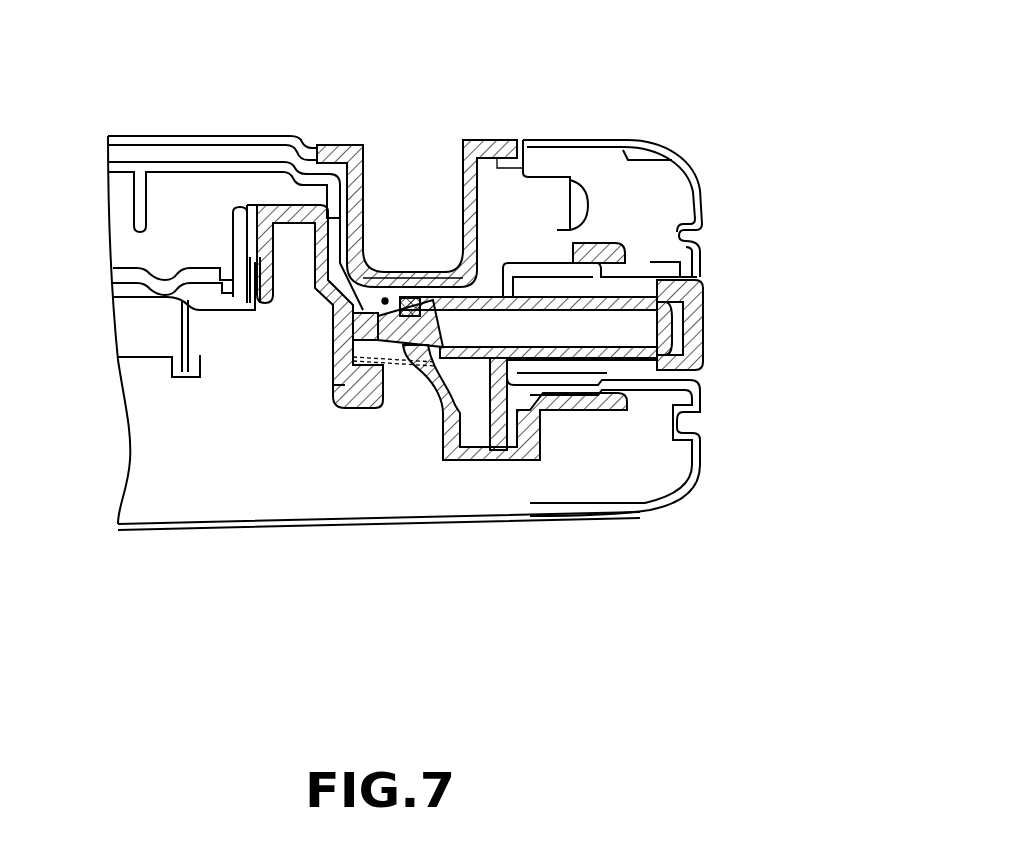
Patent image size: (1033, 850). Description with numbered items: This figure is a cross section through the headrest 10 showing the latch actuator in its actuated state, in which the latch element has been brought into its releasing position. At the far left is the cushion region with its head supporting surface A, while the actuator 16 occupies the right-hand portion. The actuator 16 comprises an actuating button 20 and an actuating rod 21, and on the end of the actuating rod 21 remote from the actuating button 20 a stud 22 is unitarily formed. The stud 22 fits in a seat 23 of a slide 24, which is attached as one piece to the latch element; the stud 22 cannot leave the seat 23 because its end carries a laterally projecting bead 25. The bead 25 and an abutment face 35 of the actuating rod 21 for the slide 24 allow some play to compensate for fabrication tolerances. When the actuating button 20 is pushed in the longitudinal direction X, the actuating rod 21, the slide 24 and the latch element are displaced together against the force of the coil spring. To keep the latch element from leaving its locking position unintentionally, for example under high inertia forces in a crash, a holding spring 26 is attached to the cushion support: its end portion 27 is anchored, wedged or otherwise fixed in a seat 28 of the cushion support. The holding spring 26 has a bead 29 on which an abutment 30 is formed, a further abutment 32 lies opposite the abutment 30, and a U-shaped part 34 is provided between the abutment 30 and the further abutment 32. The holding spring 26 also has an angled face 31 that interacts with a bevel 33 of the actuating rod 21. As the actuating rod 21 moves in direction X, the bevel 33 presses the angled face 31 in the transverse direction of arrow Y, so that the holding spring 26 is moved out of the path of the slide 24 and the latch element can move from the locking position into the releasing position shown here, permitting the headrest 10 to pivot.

The headrest 10 is at (660, 100).
The actuator 16 is at (704, 343).
The actuating button 20 is at (703, 307).
The actuating rod 21 is at (633, 350).
The stud 22 is at (372, 305).
The seat 23 is at (378, 312).
The slide 24 is at (403, 297).
The bead 25 is at (338, 318).
The holding spring 26 is at (355, 348).
The end portion 27 is at (342, 370).
The seat 28 is at (338, 388).
The bead 29 is at (390, 380).
The abutment 30 is at (410, 380).
The angled face 31 is at (455, 372).
The further abutment 32 is at (427, 380).
The bevel 33 is at (438, 380).
The U-shaped part 34 is at (440, 325).
The abutment face 35 is at (408, 297).
The longitudinal direction X is at (733, 212).
The transverse direction Y is at (508, 365).
The head supporting surface A is at (137, 537).